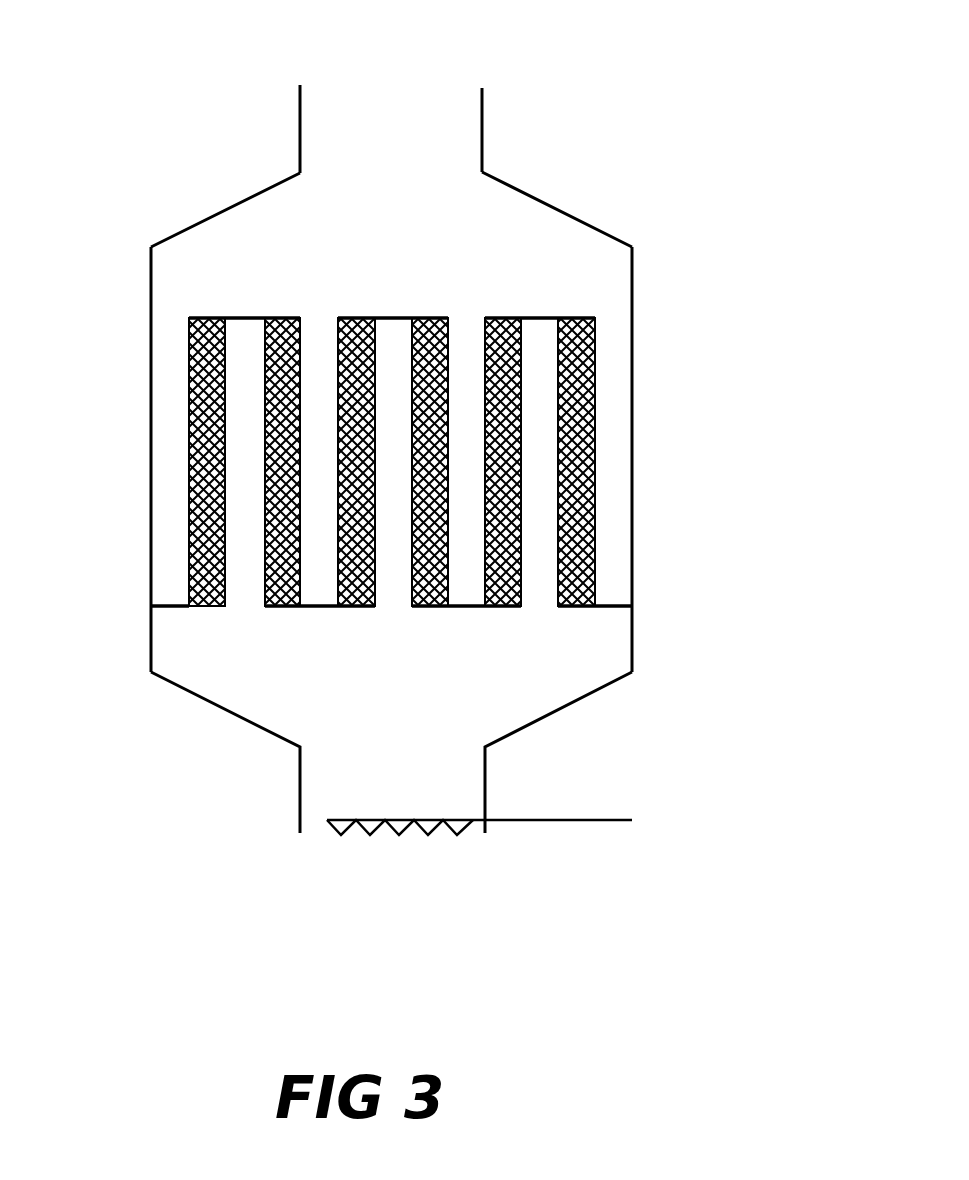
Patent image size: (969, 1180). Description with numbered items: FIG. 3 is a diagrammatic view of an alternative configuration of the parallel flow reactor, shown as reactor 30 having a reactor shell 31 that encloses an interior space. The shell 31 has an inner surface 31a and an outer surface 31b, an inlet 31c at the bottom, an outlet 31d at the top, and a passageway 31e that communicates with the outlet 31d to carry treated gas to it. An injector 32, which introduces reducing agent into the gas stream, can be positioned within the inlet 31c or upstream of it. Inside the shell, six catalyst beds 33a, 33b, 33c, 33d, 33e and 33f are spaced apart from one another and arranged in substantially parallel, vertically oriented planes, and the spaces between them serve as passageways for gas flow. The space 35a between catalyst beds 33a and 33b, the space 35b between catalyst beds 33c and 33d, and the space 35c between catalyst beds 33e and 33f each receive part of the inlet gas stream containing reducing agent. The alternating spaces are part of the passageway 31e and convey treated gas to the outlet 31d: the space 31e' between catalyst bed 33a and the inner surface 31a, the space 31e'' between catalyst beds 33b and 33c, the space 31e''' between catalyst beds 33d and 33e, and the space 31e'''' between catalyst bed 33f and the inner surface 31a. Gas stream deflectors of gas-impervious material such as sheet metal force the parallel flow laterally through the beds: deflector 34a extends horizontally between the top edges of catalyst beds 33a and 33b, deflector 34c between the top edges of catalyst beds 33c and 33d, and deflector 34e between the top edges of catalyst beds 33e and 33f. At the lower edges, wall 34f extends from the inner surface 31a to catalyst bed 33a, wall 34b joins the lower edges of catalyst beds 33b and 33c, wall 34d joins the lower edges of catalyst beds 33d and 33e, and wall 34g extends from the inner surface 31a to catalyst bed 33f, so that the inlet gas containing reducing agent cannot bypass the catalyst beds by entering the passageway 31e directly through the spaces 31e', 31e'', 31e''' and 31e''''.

The reactor 30 is at (385, 422).
The reactor shell 31 is at (385, 421).
The inner surface 31a is at (150, 488).
The outer surface 31b is at (568, 210).
The inlet 31c is at (325, 762).
The outlet 31d is at (452, 100).
The passageway 31e is at (128, 285).
The space 31e' is at (102, 353).
The space 31e'' is at (328, 274).
The space 31e''' is at (461, 273).
The space 31e'''' is at (684, 352).
The injector 32 is at (418, 818).
The catalyst bed 33a is at (208, 318).
The catalyst bed 33b is at (305, 337).
The catalyst bed 33c is at (333, 337).
The catalyst bed 33d is at (452, 338).
The catalyst bed 33e is at (481, 338).
The catalyst bed 33f is at (600, 336).
The deflector 34a is at (245, 318).
The wall 34b is at (318, 607).
The deflector 34c is at (393, 318).
The wall 34d is at (462, 607).
The deflector 34e is at (540, 318).
The wall 34f is at (176, 607).
The wall 34g is at (583, 607).
The space 35a is at (243, 592).
The space 35b is at (398, 590).
The space 35c is at (543, 590).